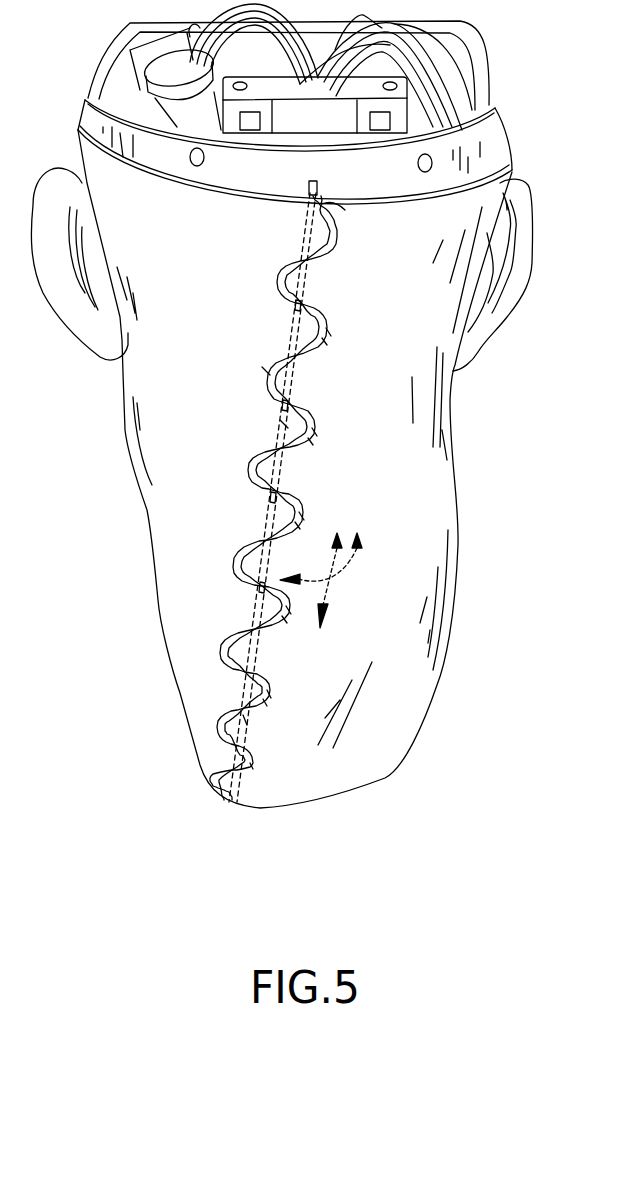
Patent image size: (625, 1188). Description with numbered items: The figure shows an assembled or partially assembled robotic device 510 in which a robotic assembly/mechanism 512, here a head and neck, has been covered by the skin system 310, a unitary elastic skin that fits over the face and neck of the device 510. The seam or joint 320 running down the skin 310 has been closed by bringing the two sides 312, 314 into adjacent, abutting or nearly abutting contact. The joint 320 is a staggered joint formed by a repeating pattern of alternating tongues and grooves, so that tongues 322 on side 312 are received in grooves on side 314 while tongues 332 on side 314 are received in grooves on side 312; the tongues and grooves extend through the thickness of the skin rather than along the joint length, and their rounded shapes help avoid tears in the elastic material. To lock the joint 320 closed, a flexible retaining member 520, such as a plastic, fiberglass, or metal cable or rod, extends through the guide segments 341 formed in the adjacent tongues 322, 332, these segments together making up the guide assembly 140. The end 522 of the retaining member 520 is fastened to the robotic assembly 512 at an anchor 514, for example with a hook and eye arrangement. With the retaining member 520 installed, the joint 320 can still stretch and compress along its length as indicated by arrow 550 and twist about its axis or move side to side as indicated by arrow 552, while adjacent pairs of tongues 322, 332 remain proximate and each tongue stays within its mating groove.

The robotic device 510 is at (281, 460).
The robotic assembly/mechanism 512 is at (208, 196).
The anchor 514 is at (320, 188).
The retaining member 520 is at (297, 400).
The end of retaining member 522 is at (330, 206).
The guide segments 341 is at (280, 425).
The side 312 is at (210, 480).
The side 314 is at (393, 506).
The seam/joint 320 is at (289, 616).
The tongue 332 is at (290, 665).
The tongue 322 is at (226, 756).
The guide assembly 140 is at (247, 718).
The skin system 310 is at (365, 772).
The arrow indicating stretching and compression 550 is at (327, 580).
The arrow indicating twisting movement 552 is at (340, 582).